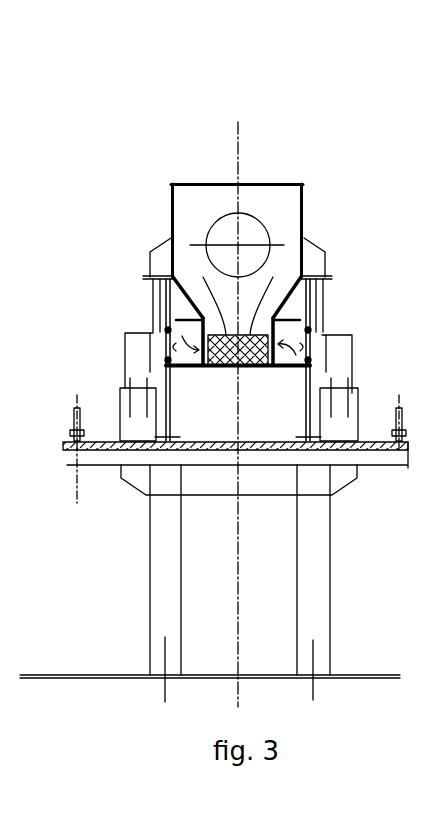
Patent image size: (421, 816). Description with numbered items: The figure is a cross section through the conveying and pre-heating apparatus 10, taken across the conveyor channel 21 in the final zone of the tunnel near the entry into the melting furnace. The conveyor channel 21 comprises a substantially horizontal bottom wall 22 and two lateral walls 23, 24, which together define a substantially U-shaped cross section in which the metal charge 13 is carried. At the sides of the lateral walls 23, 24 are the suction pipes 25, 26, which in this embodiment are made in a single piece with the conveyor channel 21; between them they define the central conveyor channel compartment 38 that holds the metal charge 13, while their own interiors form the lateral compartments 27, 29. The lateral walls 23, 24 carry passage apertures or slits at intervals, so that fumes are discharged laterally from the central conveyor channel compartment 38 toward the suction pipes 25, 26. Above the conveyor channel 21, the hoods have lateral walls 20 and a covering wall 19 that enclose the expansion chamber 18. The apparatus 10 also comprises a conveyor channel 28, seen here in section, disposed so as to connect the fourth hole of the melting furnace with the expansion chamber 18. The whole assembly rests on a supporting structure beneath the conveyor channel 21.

The conveying and pre-heating apparatus 10 is at (352, 128).
The expansion chamber 18 is at (203, 186).
The covering wall 19 is at (248, 184).
The lateral walls 20 is at (172, 205).
The conveyor channel 28 is at (254, 222).
The suction pipe 26 is at (172, 318).
The lateral wall 23 is at (300, 330).
The central conveyor channel compartment 38 is at (210, 368).
The metal charge 13 is at (252, 368).
The bottom wall 22 is at (233, 368).
The conveyor channel 21 is at (268, 370).
The lateral wall 24 is at (166, 331).
The suction pipe 25 is at (304, 348).
The lateral compartment 29 is at (165, 356).
The lateral compartment 27 is at (316, 361).